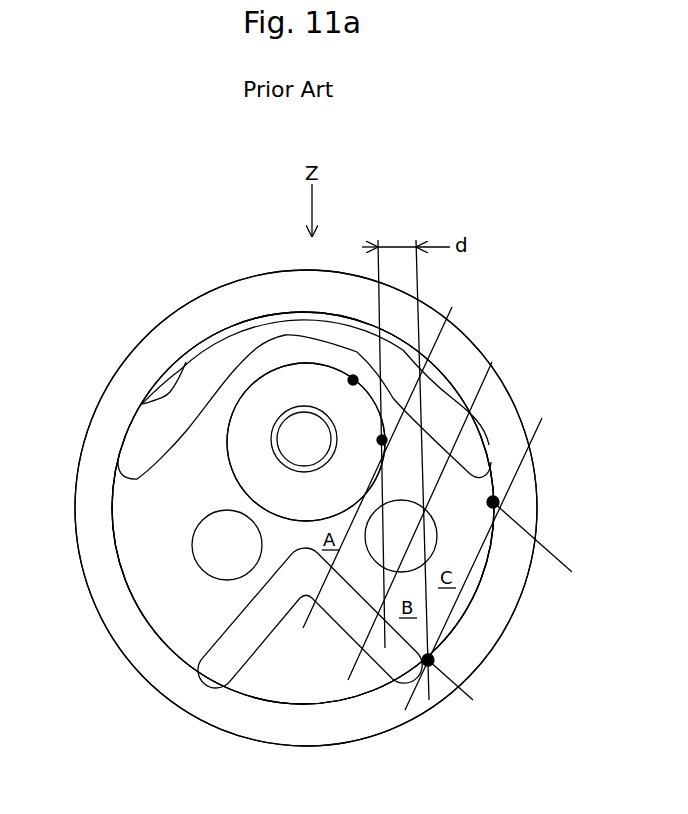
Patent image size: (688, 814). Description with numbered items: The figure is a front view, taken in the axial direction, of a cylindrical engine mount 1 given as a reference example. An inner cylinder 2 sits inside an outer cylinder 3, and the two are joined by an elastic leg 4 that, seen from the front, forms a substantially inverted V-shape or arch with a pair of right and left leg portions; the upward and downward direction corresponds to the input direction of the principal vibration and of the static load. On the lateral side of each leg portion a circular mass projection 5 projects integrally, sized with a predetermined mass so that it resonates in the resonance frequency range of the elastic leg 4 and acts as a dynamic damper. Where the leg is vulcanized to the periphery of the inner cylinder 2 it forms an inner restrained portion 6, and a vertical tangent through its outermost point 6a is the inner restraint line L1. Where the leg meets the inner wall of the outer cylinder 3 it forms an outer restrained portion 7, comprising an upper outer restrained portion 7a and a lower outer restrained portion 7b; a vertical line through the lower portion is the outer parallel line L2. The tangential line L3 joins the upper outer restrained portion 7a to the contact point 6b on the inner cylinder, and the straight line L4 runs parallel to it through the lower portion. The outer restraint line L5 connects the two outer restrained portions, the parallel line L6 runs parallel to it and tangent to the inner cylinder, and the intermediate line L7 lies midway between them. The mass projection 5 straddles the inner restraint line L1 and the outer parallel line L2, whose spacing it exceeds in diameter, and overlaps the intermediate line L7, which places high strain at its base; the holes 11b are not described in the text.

The engine mount 1 is at (124, 310).
The inner cylinder 2 is at (288, 394).
The outer cylinder 3 is at (88, 430).
The elastic leg 4 is at (125, 500).
The mass projection 5 is at (210, 552).
The inner restrained portion 6 is at (308, 363).
The point located in an outermost position of the inner restrained portion 6a is at (382, 440).
The contact point of the outer periphery of the inner cylinder 6b is at (353, 380).
The outer restrained portion 7 is at (477, 602).
The upper outer restrained portion 7a is at (499, 502).
The lower outer restrained portion 7b is at (434, 660).
The bolt holes 11b is at (227, 490).
The inner restraint line L1 is at (380, 436).
The outer parallel line L2 is at (415, 462).
The tangential line L3 is at (544, 545).
The straight line parallel to the straight line L3 L4 is at (465, 695).
The outer restraint line L5 is at (487, 555).
The parallel line L6 is at (392, 457).
The intermediate line L7 is at (436, 509).